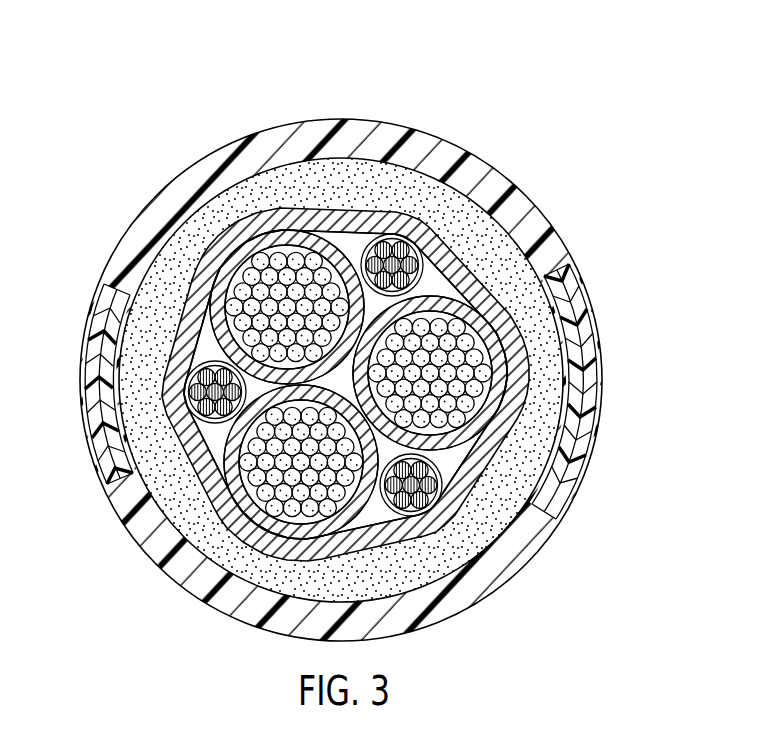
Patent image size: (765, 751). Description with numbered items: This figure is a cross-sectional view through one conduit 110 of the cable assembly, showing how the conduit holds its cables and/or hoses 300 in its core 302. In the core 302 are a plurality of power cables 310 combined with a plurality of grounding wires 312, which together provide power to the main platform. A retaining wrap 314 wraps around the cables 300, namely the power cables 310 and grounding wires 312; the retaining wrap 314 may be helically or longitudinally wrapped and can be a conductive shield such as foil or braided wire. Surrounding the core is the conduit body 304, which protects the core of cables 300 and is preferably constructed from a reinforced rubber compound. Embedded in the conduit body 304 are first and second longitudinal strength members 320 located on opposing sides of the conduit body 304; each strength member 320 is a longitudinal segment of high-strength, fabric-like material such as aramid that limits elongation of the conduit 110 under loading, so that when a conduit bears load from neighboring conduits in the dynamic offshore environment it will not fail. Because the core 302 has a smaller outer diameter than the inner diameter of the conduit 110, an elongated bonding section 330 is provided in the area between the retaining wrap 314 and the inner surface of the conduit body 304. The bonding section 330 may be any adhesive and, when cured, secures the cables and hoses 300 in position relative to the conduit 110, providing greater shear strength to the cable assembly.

The conduit 110 is at (513, 70).
The cables and/or hoses 300 is at (353, 226).
The core 302 is at (522, 287).
The conduit body 304 is at (141, 238).
The power cables 310 is at (498, 286).
The grounding wires 312 is at (186, 383).
The retaining wrap 314 is at (470, 467).
The longitudinal strength members 320 is at (86, 365).
The elongated bonding section 330 is at (190, 512).